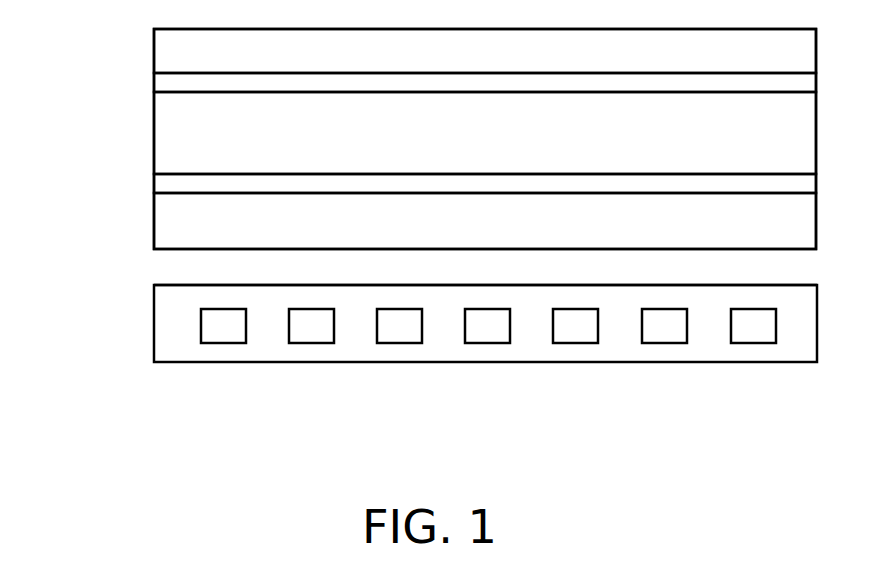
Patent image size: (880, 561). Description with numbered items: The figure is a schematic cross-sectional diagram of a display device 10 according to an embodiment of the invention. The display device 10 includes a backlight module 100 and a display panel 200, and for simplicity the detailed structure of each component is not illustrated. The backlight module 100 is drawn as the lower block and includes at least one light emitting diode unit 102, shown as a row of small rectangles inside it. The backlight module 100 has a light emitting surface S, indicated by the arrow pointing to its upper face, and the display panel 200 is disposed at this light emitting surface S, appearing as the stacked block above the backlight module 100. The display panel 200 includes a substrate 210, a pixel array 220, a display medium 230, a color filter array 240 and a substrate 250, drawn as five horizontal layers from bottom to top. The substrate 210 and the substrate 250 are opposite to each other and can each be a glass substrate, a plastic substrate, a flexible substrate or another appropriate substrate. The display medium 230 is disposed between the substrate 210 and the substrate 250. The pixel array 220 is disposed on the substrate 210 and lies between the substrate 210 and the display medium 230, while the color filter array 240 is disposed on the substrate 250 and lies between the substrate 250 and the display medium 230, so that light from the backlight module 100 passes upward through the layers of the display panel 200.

The display device 10 is at (845, 439).
The backlight module 100 is at (141, 285).
The light emitting diode unit 102 is at (217, 330).
The display panel 200 is at (76, 27).
The substrate 210 is at (154, 222).
The pixel array 220 is at (154, 182).
The display medium 230 is at (154, 133).
The color filter array 240 is at (154, 85).
The substrate 250 is at (154, 50).
The light emitting surface S is at (786, 284).